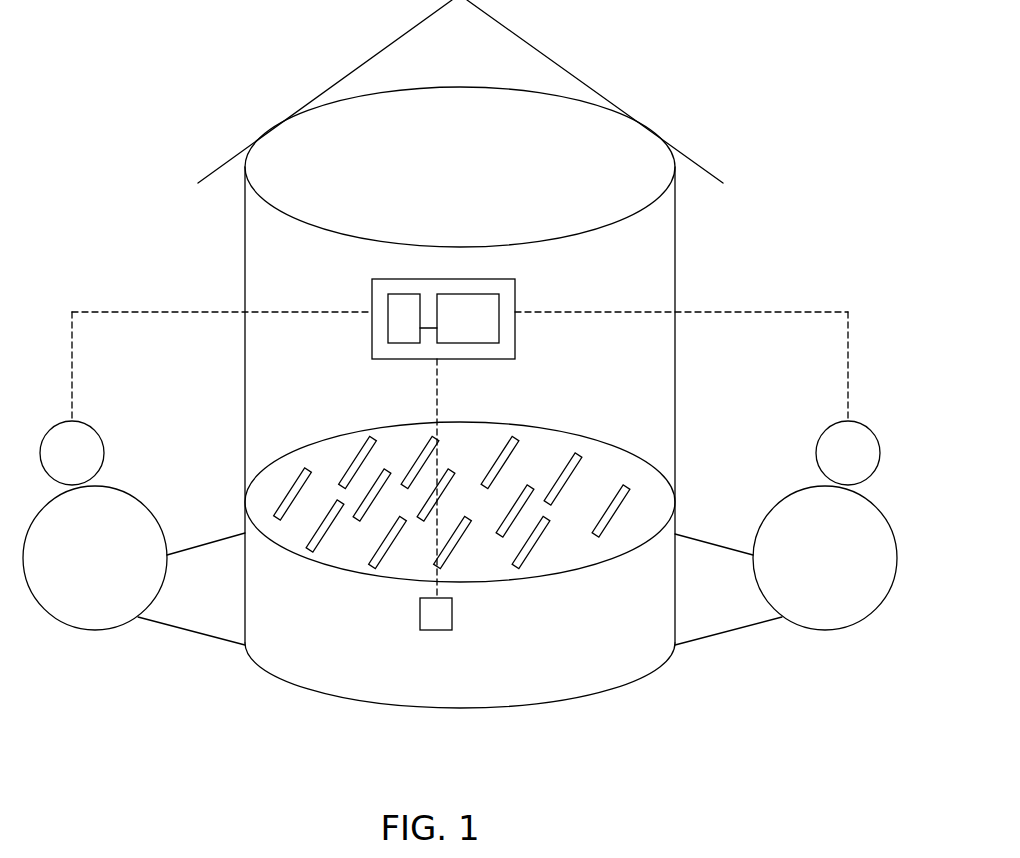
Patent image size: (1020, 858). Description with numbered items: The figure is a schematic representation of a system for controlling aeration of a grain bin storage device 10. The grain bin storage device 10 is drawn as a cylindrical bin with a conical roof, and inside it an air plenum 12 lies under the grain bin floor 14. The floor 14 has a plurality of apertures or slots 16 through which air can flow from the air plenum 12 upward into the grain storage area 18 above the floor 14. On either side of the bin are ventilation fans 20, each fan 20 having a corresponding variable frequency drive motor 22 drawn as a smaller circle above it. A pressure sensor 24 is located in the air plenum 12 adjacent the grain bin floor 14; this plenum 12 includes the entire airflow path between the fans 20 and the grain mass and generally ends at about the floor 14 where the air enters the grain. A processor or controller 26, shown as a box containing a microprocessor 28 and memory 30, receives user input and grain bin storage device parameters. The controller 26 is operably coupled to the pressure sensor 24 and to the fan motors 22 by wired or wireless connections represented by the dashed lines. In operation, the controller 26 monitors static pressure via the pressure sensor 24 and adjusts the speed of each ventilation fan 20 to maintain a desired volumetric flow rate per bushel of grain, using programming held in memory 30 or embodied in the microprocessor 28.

The grain bin storage device 10 is at (594, 55).
The air plenum 12 is at (598, 661).
The grain bin floor 14 is at (610, 450).
The slots 16 is at (507, 450).
The grain storage area 18 is at (272, 373).
The ventilation fan 20 is at (73, 608).
The variable frequency drive motor 22 is at (72, 442).
The pressure sensor 24 is at (452, 617).
The controller 26 is at (513, 349).
The microprocessor 28 is at (482, 310).
The memory 30 is at (402, 332).